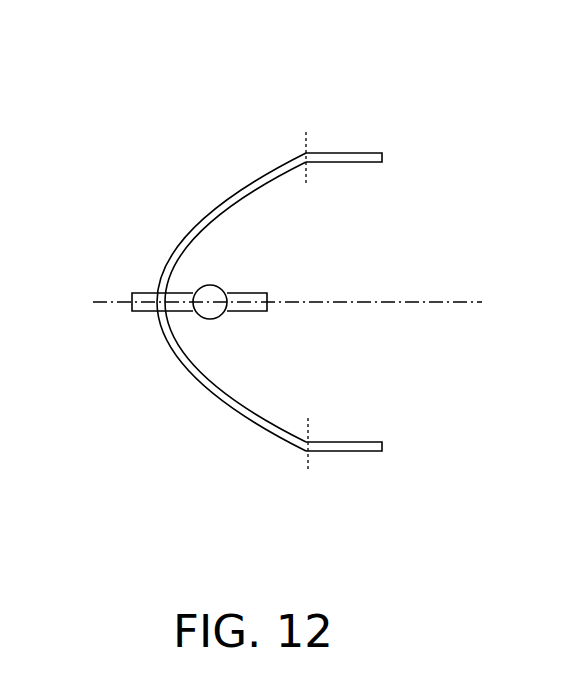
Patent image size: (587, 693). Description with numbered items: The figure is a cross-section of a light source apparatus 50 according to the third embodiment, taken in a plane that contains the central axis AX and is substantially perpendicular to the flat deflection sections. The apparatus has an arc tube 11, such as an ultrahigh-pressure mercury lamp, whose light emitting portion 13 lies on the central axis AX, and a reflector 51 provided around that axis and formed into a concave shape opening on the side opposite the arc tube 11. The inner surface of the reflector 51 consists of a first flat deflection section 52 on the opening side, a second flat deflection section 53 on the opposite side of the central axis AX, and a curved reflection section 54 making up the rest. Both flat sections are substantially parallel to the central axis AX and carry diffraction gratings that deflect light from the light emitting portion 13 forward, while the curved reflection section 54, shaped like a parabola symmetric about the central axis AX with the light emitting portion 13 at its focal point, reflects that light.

The central axis AX is at (120, 302).
The arc tube 11 is at (143, 292).
The light emitting portion 13 is at (215, 287).
The light source apparatus 50 is at (314, 257).
The reflector 51 is at (226, 197).
The first flat deflection section 52 is at (367, 162).
The second flat deflection section 53 is at (368, 441).
The curved reflection section 54 is at (248, 197).